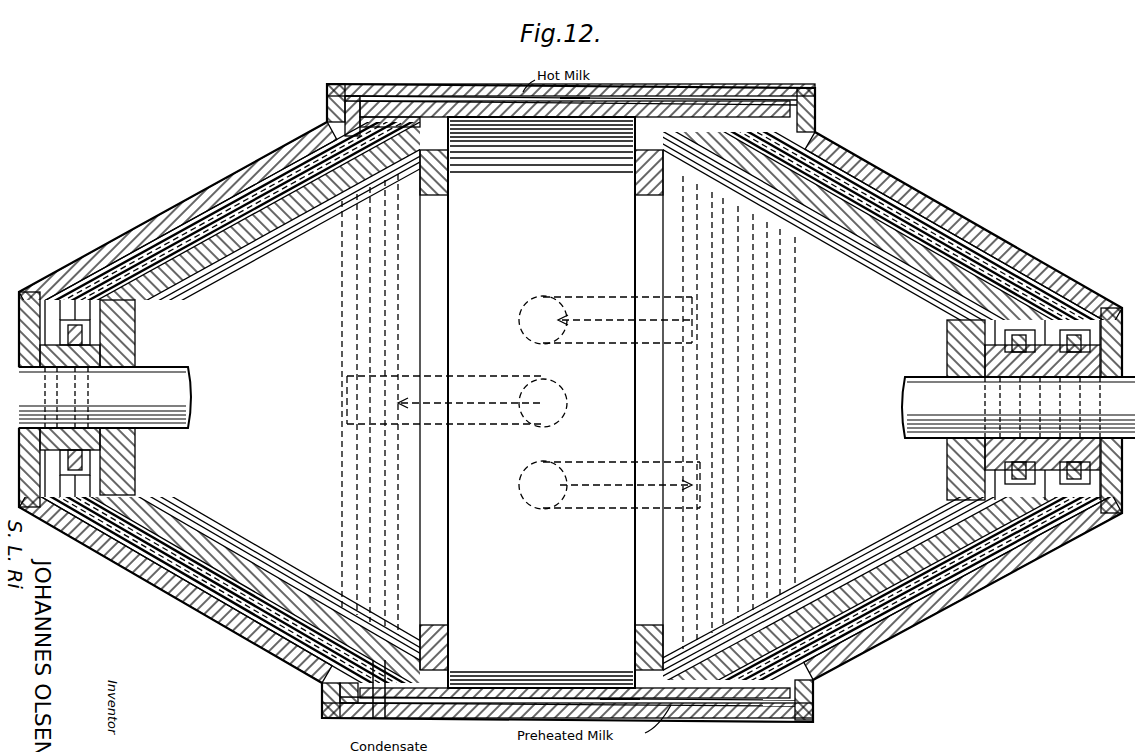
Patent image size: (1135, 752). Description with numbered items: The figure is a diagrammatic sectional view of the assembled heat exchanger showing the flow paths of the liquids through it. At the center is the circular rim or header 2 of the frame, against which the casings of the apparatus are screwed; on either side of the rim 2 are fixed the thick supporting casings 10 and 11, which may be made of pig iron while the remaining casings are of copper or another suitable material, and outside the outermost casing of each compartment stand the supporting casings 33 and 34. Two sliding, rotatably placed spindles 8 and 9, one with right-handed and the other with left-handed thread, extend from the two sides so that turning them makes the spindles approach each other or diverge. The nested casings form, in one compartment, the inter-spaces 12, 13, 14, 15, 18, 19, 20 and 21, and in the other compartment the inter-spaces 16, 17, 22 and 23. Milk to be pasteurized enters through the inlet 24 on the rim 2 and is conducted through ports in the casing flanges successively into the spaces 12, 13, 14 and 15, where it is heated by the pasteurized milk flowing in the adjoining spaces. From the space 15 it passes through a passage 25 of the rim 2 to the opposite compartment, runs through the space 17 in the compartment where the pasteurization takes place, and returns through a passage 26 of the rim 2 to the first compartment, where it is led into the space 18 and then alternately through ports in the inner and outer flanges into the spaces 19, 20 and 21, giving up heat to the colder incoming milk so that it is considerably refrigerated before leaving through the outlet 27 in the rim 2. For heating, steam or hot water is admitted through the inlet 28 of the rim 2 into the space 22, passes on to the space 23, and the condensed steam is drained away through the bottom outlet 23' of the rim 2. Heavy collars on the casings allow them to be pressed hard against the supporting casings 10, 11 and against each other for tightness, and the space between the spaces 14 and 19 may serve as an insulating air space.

The circular rim or header 2 is at (648, 85).
The spindle 8 is at (902, 438).
The spindle 9 is at (159, 429).
The supporting casing 10 is at (855, 254).
The supporting casing 11 is at (157, 306).
The inter-space 12 is at (846, 176).
The inter-space 13 is at (869, 200).
The inter-space 14 is at (894, 220).
The inter-space 15 is at (925, 240).
The inter-space 16 is at (317, 177).
The inter-space 17 is at (248, 205).
The inter-space 18 is at (1030, 272).
The inter-space 19 is at (1050, 286).
The inter-space 20 is at (927, 260).
The inter-space 21 is at (943, 287).
The inter-space 22 is at (152, 247).
The inter-space 23 is at (273, 238).
The bottom outlet 23' is at (358, 701).
The inlet 24 is at (519, 485).
The passage 25 is at (498, 710).
The passage 26 is at (440, 98).
The outlet 27 is at (519, 323).
The inlet 28 is at (558, 421).
The supporting casing 33 is at (832, 150).
The supporting casing 34 is at (87, 259).